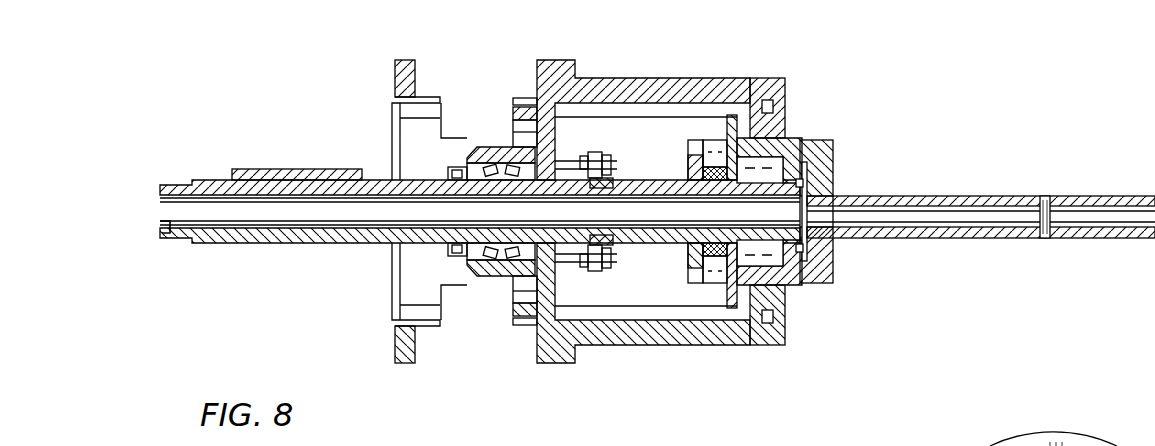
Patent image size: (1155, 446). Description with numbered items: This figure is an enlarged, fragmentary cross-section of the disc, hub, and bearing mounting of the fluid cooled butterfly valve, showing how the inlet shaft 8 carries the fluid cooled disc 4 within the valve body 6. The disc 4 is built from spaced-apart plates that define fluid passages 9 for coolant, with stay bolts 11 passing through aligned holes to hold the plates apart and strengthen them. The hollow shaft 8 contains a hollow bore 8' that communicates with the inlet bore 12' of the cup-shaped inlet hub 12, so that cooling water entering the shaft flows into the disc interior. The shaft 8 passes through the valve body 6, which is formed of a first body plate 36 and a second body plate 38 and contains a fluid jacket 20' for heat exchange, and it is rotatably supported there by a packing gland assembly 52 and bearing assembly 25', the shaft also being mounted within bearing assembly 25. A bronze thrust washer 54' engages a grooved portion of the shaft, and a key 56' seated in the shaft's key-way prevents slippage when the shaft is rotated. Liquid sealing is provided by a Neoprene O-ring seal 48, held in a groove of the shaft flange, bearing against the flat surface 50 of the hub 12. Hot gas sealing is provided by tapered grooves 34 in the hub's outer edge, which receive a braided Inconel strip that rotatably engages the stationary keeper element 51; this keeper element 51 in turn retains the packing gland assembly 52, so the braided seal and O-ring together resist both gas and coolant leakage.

The fluid cooled disc 4 is at (1100, 188).
The valve body 6 is at (663, 78).
The inlet shaft 8 is at (467, 186).
The hollow bore 8' is at (136, 241).
The fluid passages 9 is at (950, 222).
The stay bolts 11 is at (1045, 240).
The inlet hub 12 is at (846, 202).
The inlet bore 12' is at (849, 219).
The fluid jacket 20' is at (800, 206).
The bearing assembly 25 is at (464, 199).
The bearing assembly 25' is at (489, 175).
The grooves 34 is at (795, 148).
The first body plate 36 is at (935, 195).
The second body plate 38 is at (1008, 240).
The O-ring seal 48 is at (805, 183).
The flat surface 50 is at (812, 250).
The keeper element 51 is at (785, 127).
The packing gland assembly 52 is at (717, 250).
The thrust washer 54' is at (615, 205).
The key 56' is at (297, 148).